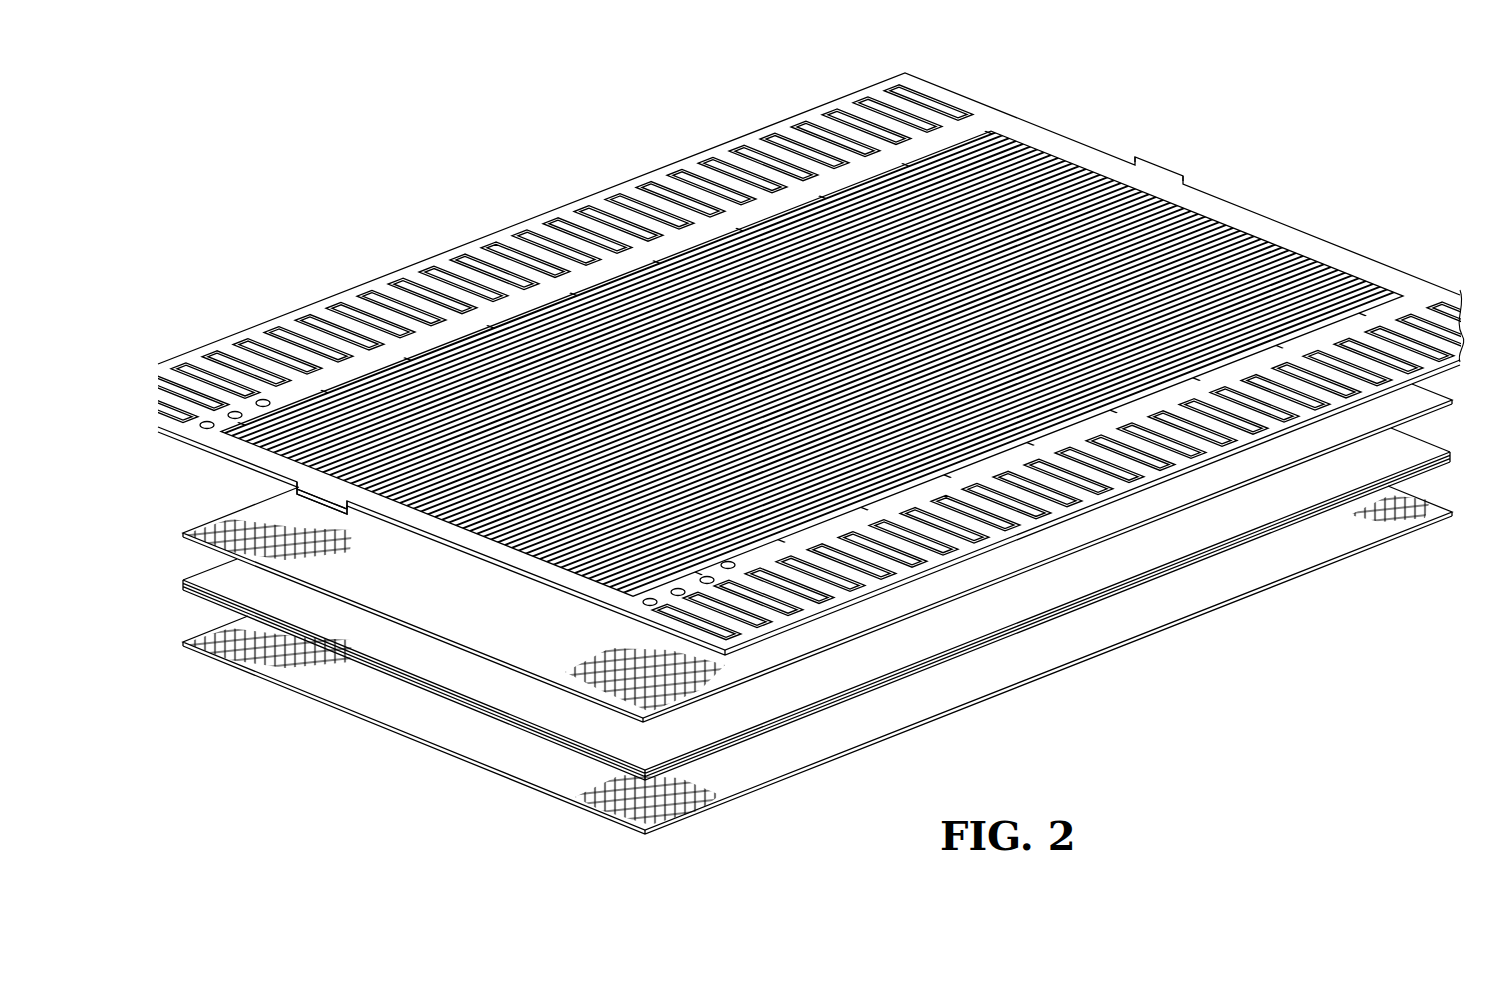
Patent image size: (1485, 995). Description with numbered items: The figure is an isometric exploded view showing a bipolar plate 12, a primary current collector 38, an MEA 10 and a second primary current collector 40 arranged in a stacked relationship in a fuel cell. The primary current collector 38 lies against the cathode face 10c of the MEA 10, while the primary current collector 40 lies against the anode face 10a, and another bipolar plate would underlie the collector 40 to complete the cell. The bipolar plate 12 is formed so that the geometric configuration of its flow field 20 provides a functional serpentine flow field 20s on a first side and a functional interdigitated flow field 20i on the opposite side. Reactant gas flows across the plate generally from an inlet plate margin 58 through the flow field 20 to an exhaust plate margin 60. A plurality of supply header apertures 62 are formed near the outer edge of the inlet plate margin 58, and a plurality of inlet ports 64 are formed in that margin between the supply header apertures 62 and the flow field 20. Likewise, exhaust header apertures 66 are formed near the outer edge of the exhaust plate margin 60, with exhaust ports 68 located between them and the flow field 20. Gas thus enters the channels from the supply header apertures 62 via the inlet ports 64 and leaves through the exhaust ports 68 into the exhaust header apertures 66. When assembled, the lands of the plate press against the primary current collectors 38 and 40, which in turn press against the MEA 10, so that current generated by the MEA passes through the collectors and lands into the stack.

The bipolar plate 12 is at (1273, 238).
The inlet plate margin 58 is at (943, 93).
The exhaust plate margin 60 is at (1425, 292).
The flow field 20 is at (348, 370).
The serpentine flow field 20s is at (1048, 158).
The interdigitated flow field 20i is at (262, 480).
The supply header apertures 62 is at (207, 395).
The inlet ports 64 is at (265, 408).
The exhaust header apertures 66 is at (800, 612).
The exhaust ports 68 is at (676, 597).
The primary current collector 38 is at (1418, 397).
The primary current collector 40 is at (1325, 545).
The MEA 10 is at (754, 723).
The anode face 10a is at (195, 599).
The cathode face 10c is at (1412, 448).